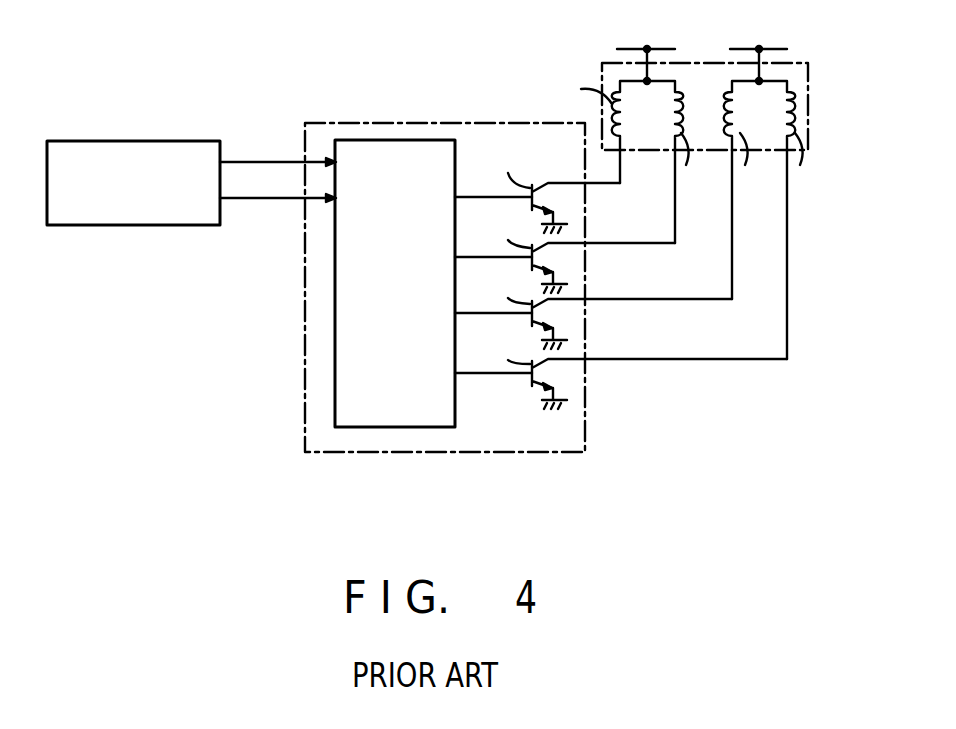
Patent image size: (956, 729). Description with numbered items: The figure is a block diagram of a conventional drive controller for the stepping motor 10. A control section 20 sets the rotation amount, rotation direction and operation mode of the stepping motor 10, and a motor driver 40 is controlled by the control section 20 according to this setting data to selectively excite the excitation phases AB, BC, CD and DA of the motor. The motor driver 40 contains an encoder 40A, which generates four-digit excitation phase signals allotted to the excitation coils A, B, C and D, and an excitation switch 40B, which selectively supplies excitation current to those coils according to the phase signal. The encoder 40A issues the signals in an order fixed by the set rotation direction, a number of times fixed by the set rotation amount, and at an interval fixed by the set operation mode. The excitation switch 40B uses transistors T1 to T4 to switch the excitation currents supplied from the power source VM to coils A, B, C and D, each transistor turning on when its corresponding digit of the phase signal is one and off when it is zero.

The stepping motor 10 is at (808, 93).
The control section 20 is at (122, 140).
The motor driver 40 is at (397, 123).
The encoder 40A is at (388, 428).
The excitation switch 40B is at (513, 425).